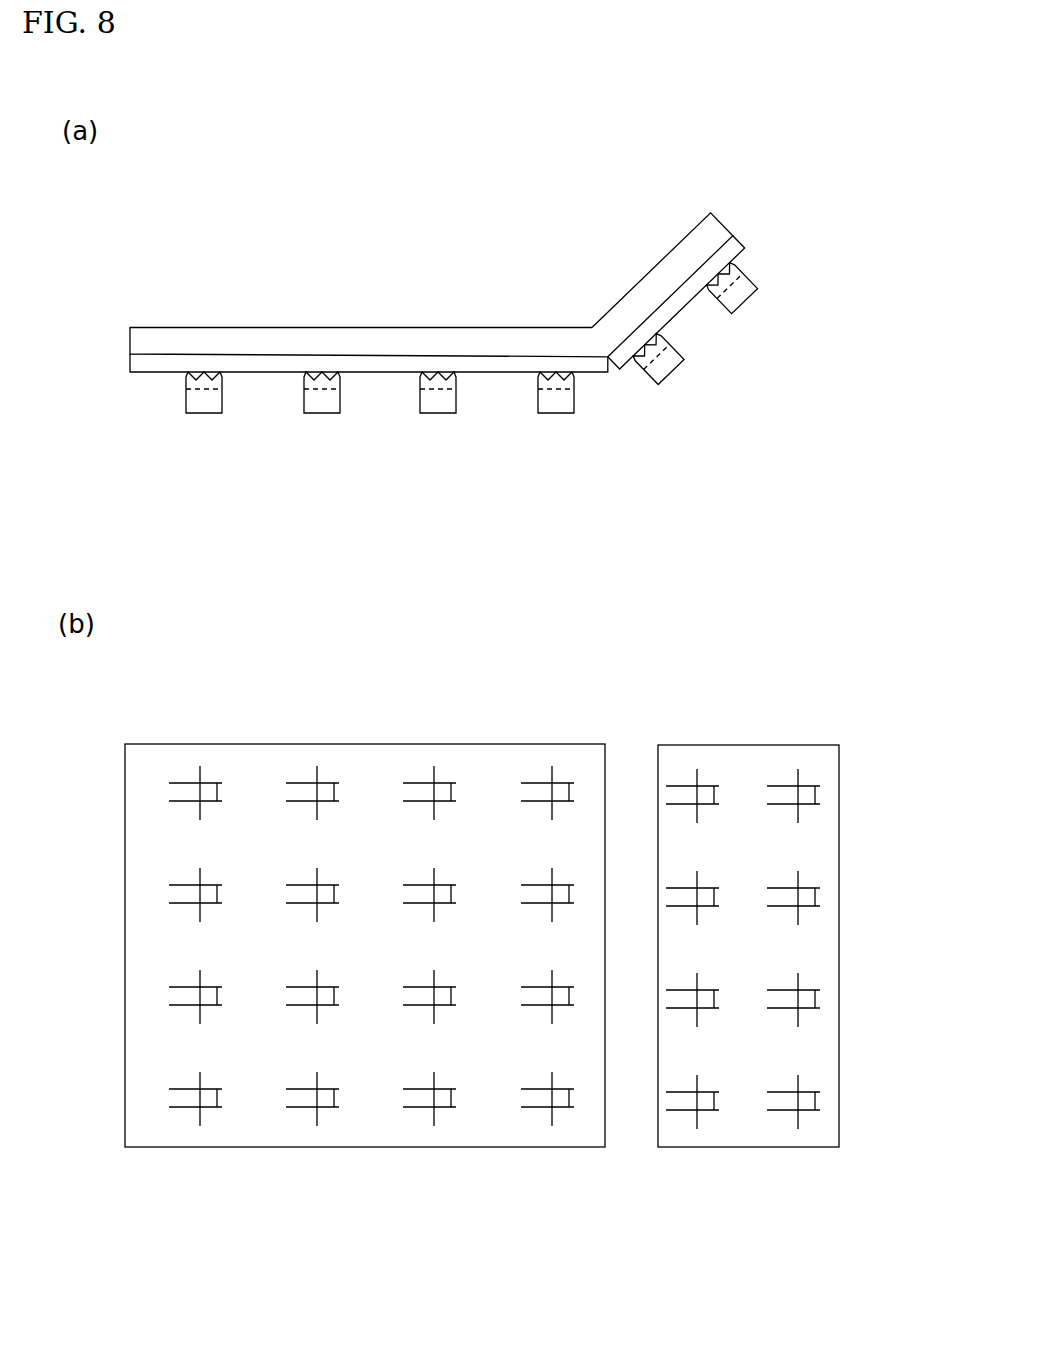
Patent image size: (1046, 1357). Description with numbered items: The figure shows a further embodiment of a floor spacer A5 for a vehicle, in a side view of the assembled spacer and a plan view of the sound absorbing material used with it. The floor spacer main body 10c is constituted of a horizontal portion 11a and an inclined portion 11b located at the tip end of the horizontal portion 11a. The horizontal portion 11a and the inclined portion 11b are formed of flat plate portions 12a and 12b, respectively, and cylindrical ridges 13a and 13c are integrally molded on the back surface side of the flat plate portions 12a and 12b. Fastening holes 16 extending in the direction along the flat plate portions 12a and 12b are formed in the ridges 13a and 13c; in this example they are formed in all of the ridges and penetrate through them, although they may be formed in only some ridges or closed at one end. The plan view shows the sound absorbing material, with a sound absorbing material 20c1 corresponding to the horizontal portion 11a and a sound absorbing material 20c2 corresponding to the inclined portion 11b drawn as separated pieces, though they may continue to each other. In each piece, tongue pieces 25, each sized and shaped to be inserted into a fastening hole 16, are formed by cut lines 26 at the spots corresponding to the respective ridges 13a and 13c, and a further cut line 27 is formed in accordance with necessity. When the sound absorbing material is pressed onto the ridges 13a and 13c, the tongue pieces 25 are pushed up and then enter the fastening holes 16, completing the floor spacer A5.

The floor spacer for a vehicle A5 is at (378, 218).
The floor spacer main body 10c is at (431, 243).
The horizontal portion 11a is at (369, 293).
The inclined portion 11b is at (646, 243).
The flat plate portion 12a is at (303, 346).
The flat plate portion 12b is at (703, 240).
The ridges 13a is at (204, 414).
The ridges 13c is at (686, 365).
The fastening holes 16 is at (200, 390).
The sound absorbing material 20c1 is at (380, 367).
The sound absorbing material 20c2 is at (733, 243).
The tongue pieces 25 is at (539, 948).
The cut lines 26 is at (340, 792).
The cut line 27 is at (435, 1082).